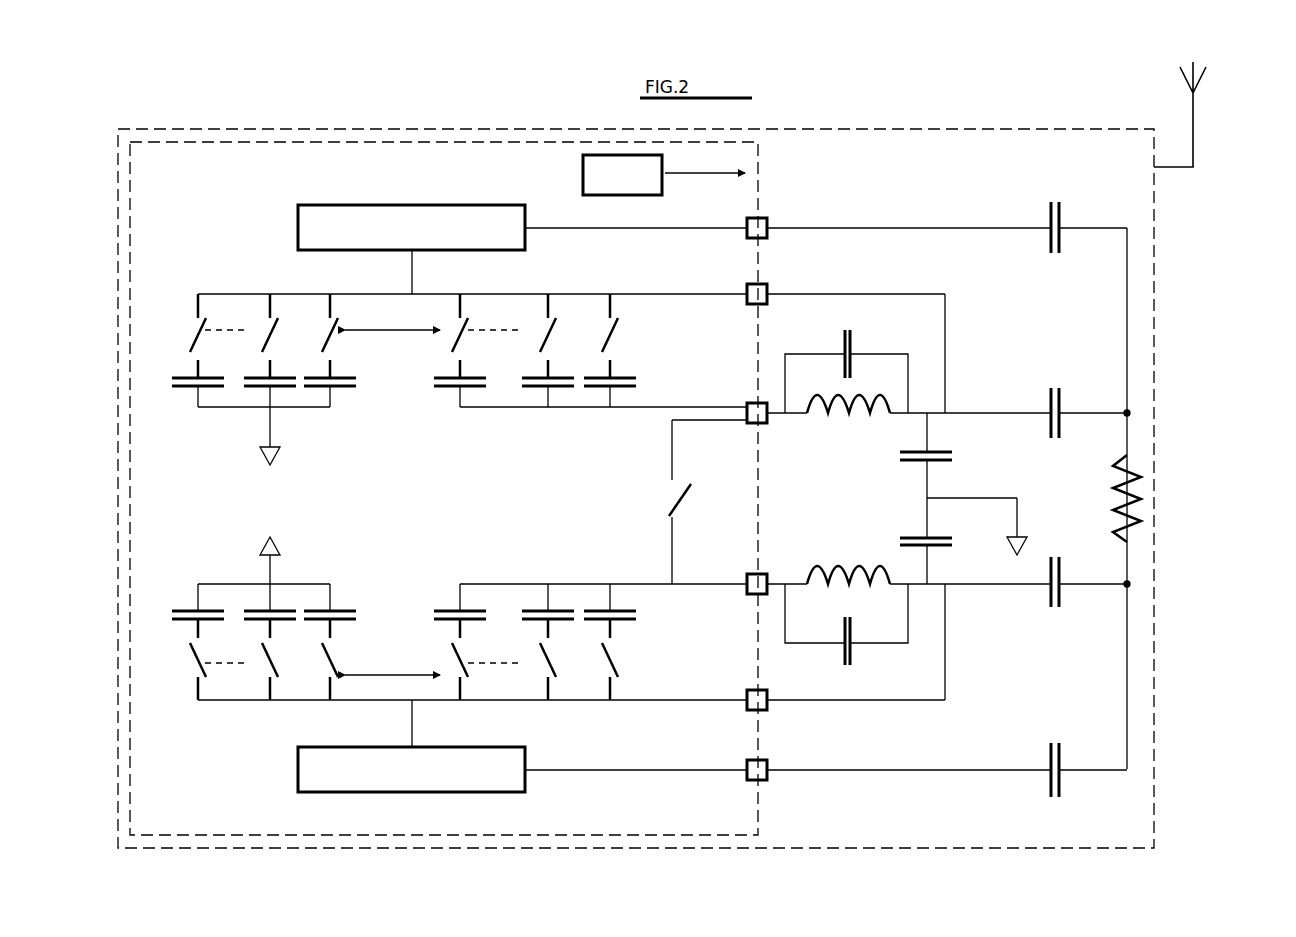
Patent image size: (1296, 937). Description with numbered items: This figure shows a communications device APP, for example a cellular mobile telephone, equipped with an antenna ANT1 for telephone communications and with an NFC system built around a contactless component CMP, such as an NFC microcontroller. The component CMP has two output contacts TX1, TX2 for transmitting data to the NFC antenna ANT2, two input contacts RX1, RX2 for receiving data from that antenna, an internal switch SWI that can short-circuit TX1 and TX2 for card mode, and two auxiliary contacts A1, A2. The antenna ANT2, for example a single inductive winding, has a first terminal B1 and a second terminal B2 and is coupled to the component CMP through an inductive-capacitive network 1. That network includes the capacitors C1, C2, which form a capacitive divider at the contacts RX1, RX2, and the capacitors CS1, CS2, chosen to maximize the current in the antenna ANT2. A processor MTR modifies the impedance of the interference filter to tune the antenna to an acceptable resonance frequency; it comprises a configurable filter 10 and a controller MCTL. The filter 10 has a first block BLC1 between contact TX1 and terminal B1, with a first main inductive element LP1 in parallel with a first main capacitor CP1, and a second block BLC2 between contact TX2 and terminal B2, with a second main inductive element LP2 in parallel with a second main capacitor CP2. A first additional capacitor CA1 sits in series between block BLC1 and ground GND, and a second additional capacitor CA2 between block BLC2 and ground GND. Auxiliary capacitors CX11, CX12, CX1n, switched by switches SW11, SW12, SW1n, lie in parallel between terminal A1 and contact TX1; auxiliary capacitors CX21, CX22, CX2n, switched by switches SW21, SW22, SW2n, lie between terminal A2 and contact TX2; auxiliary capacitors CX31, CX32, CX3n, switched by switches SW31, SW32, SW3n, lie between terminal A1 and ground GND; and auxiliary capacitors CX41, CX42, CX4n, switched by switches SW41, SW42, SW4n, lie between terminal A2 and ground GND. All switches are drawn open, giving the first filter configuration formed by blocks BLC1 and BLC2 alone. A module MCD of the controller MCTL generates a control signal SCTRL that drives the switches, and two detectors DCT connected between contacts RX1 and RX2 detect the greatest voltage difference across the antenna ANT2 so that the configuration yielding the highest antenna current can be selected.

The inductive-capacitive network 1 is at (1090, 196).
The configurable filter 10 is at (958, 298).
The communications device APP is at (1167, 757).
The contactless component CMP is at (761, 806).
The processor MTR is at (898, 200).
The controller MCTL is at (769, 236).
The module MCD is at (622, 175).
The control signal SCTRL is at (545, 412).
The detector DCT is at (411, 498).
The contact RX1 is at (746, 224).
The contact RX2 is at (747, 765).
The contact TX1 is at (750, 424).
The contact TX2 is at (748, 577).
The auxiliary contact A1 is at (746, 290).
The auxiliary contact A2 is at (747, 695).
The switch SW3n is at (196, 334).
The switch SW32 is at (260, 334).
The switch SW31 is at (318, 334).
The switch SW1n is at (466, 334).
The switch SW12 is at (536, 334).
The switch SW11 is at (598, 334).
The switch SW4n is at (196, 664).
The switch SW42 is at (260, 664).
The switch SW41 is at (318, 664).
The switch SW2n is at (466, 664).
The switch SW22 is at (536, 664).
The switch SW21 is at (598, 664).
The auxiliary capacitor CX3n is at (172, 390).
The auxiliary capacitor CX32 is at (294, 390).
The auxiliary capacitor CX31 is at (357, 390).
The auxiliary capacitor CX1n is at (434, 390).
The auxiliary capacitor CX12 is at (552, 390).
The auxiliary capacitor CX11 is at (611, 390).
The auxiliary capacitor CX4n is at (172, 607).
The auxiliary capacitor CX42 is at (294, 608).
The auxiliary capacitor CX41 is at (357, 608).
The auxiliary capacitor CX2n is at (434, 607).
The auxiliary capacitor CX22 is at (552, 608).
The auxiliary capacitor CX21 is at (611, 608).
The ground GND is at (621, 495).
The internal switch SWI is at (668, 500).
The first block BLC1 is at (894, 403).
The second block BLC2 is at (887, 596).
The first main inductive element LP1 is at (802, 418).
The second main inductive element LP2 is at (800, 576).
The first main capacitor CP1 is at (855, 345).
The second main capacitor CP2 is at (855, 658).
The first additional capacitor CA1 is at (949, 466).
The second additional capacitor CA2 is at (944, 550).
The capacitor C1 is at (1053, 217).
The capacitor C2 is at (1053, 760).
The capacitor CS1 is at (1052, 402).
The capacitor CS2 is at (1052, 572).
The first terminal B1 is at (1131, 413).
The second terminal B2 is at (1131, 584).
The antenna ANT1 is at (1196, 94).
The antenna ANT2 is at (1146, 503).